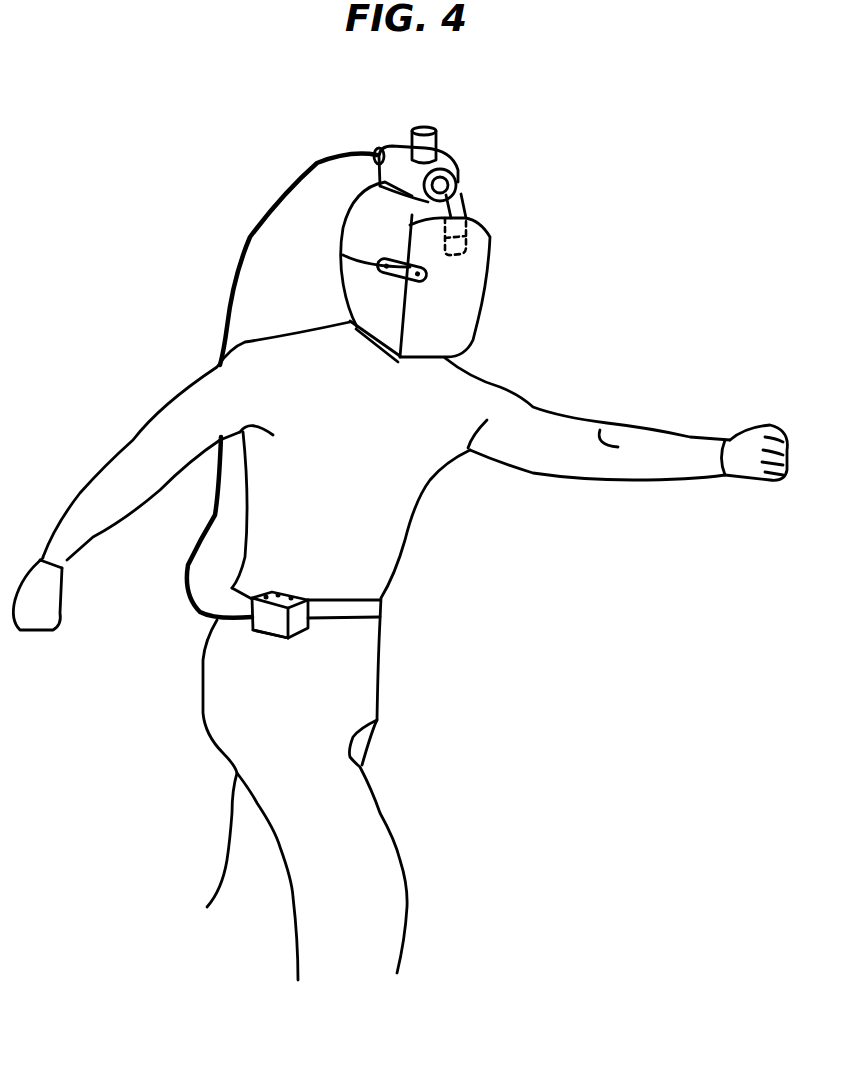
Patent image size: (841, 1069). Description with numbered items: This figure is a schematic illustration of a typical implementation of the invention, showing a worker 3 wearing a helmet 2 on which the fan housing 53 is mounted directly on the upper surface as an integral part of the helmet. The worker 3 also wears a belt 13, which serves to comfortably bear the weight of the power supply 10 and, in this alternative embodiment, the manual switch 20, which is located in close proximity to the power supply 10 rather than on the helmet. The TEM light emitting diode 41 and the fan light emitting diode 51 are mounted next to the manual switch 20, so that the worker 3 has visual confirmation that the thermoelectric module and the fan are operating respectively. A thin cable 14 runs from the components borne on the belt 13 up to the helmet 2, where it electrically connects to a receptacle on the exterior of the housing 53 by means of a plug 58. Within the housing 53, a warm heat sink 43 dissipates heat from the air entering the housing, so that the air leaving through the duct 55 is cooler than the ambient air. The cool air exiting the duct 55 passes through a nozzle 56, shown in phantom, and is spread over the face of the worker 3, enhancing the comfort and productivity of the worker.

The helmet 2 is at (345, 228).
The worker 3 is at (400, 507).
The power supply 10 is at (293, 637).
The belt 13 is at (368, 608).
The cable 14 is at (222, 313).
The manual switch 20 is at (290, 597).
The TEM light emitting diode 41 is at (278, 592).
The warm heat sink 43 is at (440, 131).
The fan light emitting diode 51 is at (267, 634).
The fan housing 53 is at (460, 168).
The duct 55 is at (467, 202).
The nozzle 56 is at (466, 252).
The plug 58 is at (377, 150).